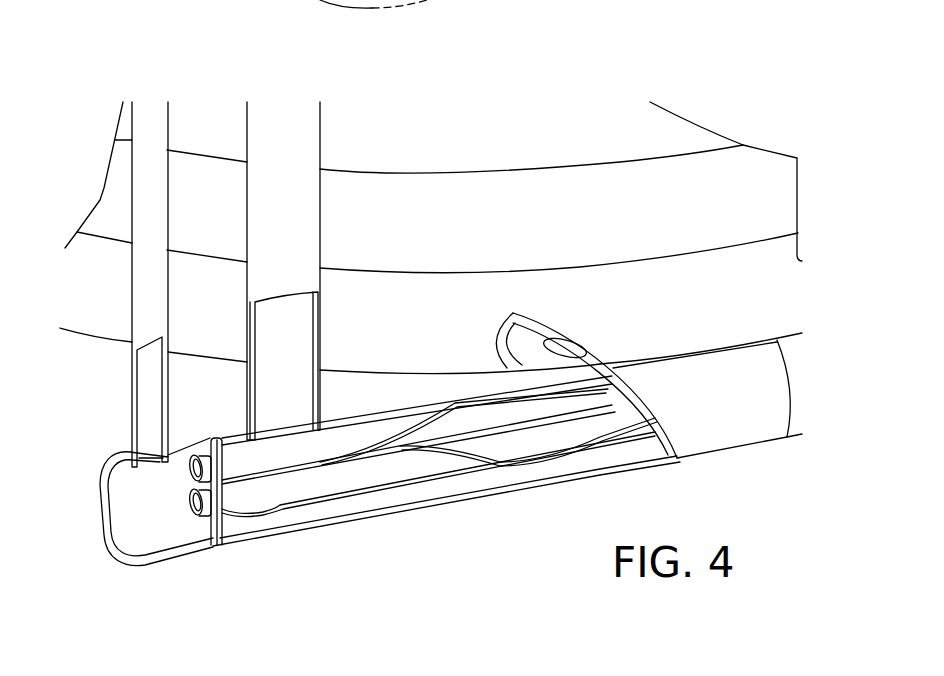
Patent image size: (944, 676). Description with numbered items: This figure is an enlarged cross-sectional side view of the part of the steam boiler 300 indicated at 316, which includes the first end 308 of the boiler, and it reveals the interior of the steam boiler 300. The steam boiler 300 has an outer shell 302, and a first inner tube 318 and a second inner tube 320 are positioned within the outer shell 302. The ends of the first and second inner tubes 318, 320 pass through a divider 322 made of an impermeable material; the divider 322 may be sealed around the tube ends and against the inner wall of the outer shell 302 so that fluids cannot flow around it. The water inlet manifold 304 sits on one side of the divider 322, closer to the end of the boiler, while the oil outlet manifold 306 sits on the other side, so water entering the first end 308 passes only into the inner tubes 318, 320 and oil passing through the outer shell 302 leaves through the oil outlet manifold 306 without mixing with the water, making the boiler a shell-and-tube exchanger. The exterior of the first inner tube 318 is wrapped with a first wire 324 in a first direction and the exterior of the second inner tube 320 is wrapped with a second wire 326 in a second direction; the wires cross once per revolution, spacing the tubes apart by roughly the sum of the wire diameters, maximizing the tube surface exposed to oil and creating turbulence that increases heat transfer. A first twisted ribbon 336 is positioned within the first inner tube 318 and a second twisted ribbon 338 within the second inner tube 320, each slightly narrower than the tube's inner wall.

The steam boiler 300 is at (516, 234).
The outer shell 302 is at (532, 485).
The water inlet manifold 304 is at (132, 398).
The oil outlet manifold 306 is at (252, 333).
The first end 308 is at (242, 578).
The part of the steam boiler 316 is at (741, 79).
The first inner tube 318 is at (348, 435).
The second inner tube 320 is at (340, 513).
The divider 322 is at (217, 530).
The first wire 324 is at (422, 420).
The second wire 326 is at (435, 447).
The first twisted ribbon 336 is at (193, 457).
The second twisted ribbon 338 is at (200, 513).